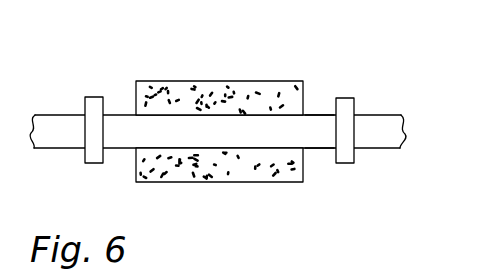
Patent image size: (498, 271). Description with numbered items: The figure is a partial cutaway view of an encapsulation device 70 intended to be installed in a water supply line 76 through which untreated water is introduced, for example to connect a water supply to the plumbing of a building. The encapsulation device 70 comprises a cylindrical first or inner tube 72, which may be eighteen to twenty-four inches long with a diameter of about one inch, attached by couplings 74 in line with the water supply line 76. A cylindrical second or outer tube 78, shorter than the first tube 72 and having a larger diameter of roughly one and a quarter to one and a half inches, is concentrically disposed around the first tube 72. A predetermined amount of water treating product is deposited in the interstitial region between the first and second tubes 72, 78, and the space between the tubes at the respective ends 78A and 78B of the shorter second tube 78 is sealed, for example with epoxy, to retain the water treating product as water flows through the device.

The encapsulation device 70 is at (183, 48).
The first tube 72 is at (323, 126).
The couplings 74 is at (93, 107).
The water supply line 76 is at (58, 138).
The second tube 78 is at (228, 80).
The end of second tube 78A is at (140, 160).
The end of second tube 78B is at (297, 172).